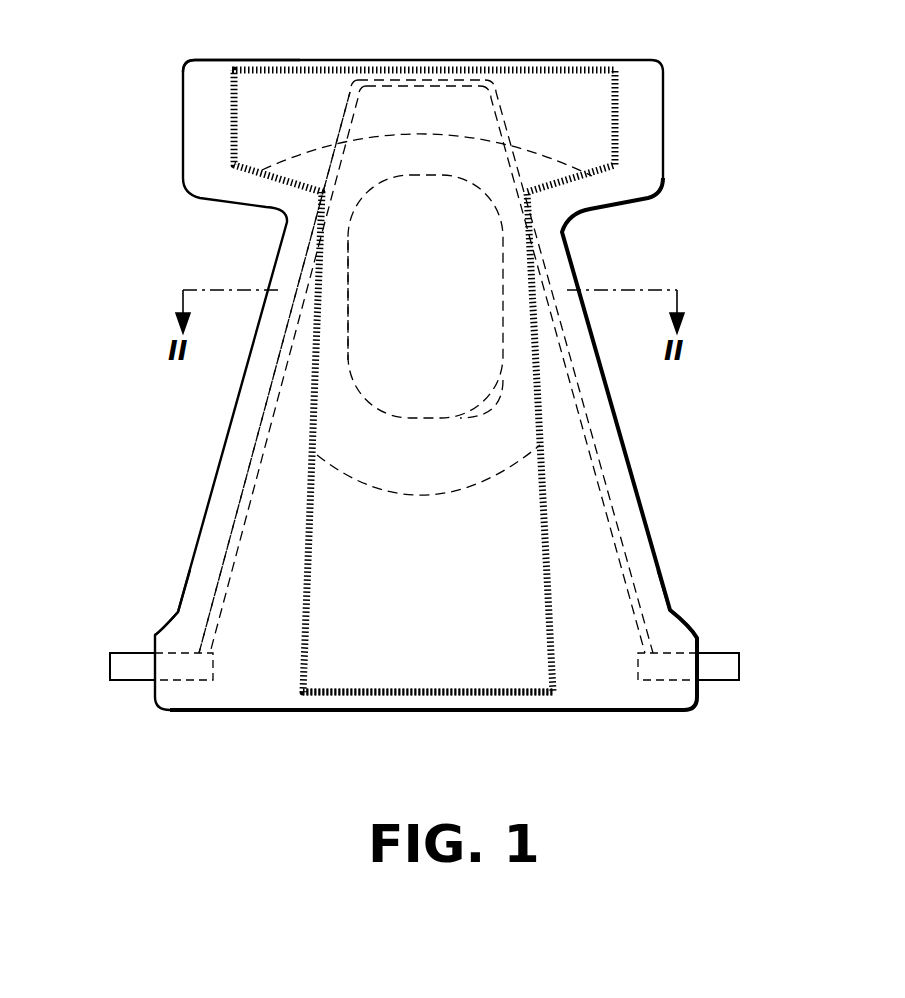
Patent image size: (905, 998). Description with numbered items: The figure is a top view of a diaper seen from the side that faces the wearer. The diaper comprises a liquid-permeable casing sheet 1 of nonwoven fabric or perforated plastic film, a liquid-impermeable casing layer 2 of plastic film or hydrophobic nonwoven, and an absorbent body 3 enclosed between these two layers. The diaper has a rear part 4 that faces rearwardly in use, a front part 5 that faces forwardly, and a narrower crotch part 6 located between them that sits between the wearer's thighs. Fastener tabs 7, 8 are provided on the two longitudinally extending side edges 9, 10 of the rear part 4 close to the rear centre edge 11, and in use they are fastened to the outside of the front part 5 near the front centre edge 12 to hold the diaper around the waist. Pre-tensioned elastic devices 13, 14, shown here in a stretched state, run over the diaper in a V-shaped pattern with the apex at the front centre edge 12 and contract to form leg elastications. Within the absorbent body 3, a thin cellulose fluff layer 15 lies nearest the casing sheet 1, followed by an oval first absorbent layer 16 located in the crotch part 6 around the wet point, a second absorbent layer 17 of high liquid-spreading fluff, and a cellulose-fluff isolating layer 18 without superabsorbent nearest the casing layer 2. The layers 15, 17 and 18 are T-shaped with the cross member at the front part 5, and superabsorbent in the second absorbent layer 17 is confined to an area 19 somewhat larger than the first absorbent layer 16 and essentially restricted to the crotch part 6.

The liquid-permeable casing sheet 1 is at (295, 350).
The liquid-impermeable casing layer 2 is at (550, 375).
The absorbent body 3 is at (422, 100).
The rear part 4 is at (262, 565).
The front part 5 is at (546, 94).
The crotch part 6 is at (510, 245).
The fastener tab 7 is at (122, 670).
The fastener tab 8 is at (740, 665).
The side edge 9 is at (173, 625).
The side edge 10 is at (683, 628).
The rear centre edge 11 is at (457, 713).
The front centre edge 12 is at (236, 60).
The elastic device 13 is at (250, 480).
The elastic device 14 is at (598, 460).
The cellulose fluff layer 15 is at (492, 430).
The first absorbent layer 16 is at (362, 247).
The second absorbent layer 17 is at (505, 547).
The isolating layer 18 is at (338, 443).
The superabsorbent-containing area 19 is at (338, 390).